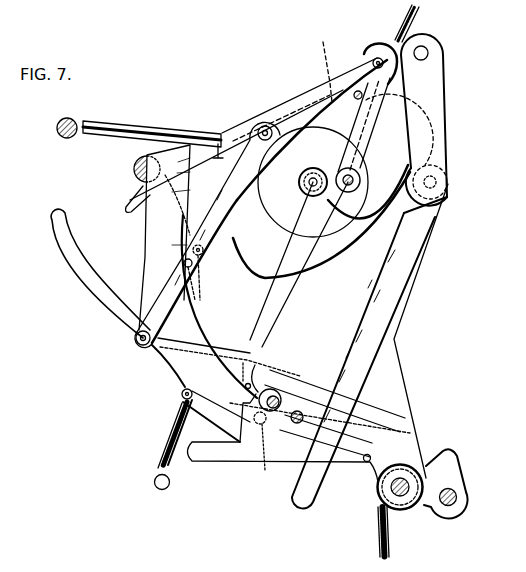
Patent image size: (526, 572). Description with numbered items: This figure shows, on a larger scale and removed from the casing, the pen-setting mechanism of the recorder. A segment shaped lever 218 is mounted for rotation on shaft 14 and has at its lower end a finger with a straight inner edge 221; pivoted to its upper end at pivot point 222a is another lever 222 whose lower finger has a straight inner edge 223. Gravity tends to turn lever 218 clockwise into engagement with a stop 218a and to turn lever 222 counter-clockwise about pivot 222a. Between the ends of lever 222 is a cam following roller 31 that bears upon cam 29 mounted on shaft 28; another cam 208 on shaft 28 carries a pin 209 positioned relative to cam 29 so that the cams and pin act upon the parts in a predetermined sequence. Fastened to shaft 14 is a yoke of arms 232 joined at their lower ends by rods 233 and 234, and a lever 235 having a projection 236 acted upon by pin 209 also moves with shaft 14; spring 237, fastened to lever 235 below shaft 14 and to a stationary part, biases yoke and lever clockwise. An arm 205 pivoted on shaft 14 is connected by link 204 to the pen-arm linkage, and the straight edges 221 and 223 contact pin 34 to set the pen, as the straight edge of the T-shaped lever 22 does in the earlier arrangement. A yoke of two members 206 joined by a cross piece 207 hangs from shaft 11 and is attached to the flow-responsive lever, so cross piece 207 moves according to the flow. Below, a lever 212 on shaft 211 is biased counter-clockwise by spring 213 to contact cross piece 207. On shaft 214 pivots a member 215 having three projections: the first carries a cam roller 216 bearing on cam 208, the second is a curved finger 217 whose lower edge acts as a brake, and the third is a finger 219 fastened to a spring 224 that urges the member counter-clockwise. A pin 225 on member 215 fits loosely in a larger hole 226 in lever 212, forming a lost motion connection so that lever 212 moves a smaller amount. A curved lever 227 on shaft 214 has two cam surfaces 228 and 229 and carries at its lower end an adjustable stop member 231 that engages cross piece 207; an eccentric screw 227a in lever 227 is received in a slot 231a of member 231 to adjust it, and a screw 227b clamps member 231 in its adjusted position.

The shaft 11 is at (438, 52).
The shaft 14 is at (263, 125).
The lever 22 is at (330, 341).
The shaft 28 is at (352, 172).
The cam 29 is at (403, 133).
The cam following roller 31 is at (268, 209).
The pin 34 is at (205, 255).
The link 204 is at (418, 10).
The arm 205 is at (296, 147).
The yoke member 206 is at (406, 290).
The cross piece 207 is at (292, 498).
The cam 208 is at (438, 212).
The pin 209 is at (364, 192).
The shaft 211 is at (466, 490).
The lever 212 is at (437, 458).
The spring 213 is at (378, 527).
The shaft 214 is at (403, 497).
The member 215 is at (400, 337).
The cam roller 216 is at (446, 180).
The curved finger 217 is at (80, 258).
The segment shaped lever 218 is at (230, 128).
The stop 218a is at (133, 176).
The finger 219 is at (181, 394).
The straight inner edge 221 is at (133, 207).
The lever 222 is at (273, 272).
The pivot point 222a is at (378, 56).
The straight inner edge 223 is at (262, 322).
The spring 224 is at (170, 450).
The pin 225 is at (225, 455).
The hole 226 is at (265, 451).
The curved lever 227 is at (374, 420).
The eccentric screw 227a is at (247, 385).
The screw 227b is at (390, 450).
The cam surface 228 is at (192, 303).
The cam surface 229 is at (144, 258).
The stop member 231 is at (301, 382).
The slot 231a is at (265, 378).
The yoke arm 232 is at (233, 220).
The rod 233 is at (191, 266).
The rod 234 is at (140, 348).
The lever 235 is at (321, 68).
The projection 236 is at (296, 182).
The spring 237 is at (124, 123).